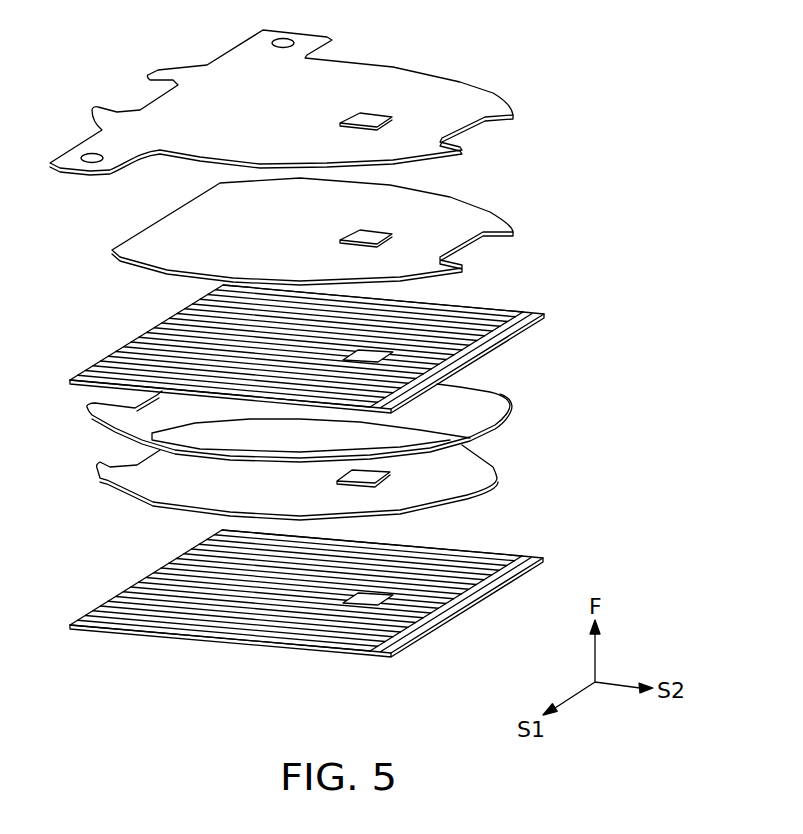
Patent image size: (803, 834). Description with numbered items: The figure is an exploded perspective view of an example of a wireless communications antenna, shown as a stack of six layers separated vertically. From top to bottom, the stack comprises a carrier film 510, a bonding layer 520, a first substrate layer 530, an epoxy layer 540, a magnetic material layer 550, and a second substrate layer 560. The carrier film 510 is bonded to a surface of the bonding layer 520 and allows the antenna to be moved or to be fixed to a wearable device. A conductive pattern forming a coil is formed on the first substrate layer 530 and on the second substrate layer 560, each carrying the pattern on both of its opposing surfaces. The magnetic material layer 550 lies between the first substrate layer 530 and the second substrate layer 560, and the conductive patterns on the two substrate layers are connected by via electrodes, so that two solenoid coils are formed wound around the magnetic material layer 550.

The carrier film 510 is at (500, 88).
The bonding layer 520 is at (493, 217).
The first substrate layer 530 is at (540, 314).
The epoxy layer 540 is at (503, 413).
The magnetic material layer 550 is at (490, 468).
The second substrate layer 560 is at (540, 555).